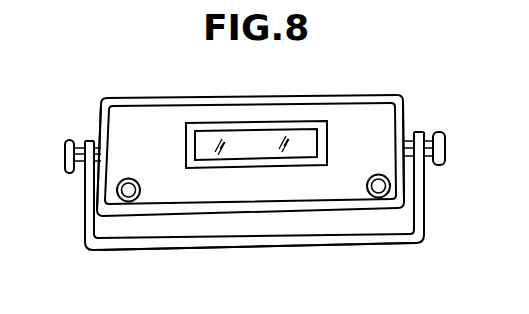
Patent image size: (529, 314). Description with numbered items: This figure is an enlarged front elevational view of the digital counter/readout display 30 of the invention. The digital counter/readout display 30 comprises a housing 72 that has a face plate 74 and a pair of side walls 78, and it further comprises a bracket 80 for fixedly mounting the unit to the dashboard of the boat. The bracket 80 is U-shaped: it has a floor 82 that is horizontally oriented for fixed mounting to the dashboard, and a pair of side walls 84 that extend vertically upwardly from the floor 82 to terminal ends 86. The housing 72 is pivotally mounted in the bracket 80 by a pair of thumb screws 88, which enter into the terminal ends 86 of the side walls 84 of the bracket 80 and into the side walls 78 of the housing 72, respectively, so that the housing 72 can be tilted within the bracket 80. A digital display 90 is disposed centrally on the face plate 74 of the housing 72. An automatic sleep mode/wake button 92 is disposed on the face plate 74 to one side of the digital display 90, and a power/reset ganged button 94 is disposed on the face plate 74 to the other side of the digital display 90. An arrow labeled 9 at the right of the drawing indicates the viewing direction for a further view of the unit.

The digital counter/readout display 30 is at (257, 157).
The housing 72 is at (197, 98).
The face plate 74 is at (334, 109).
The side walls 78 is at (101, 109).
The bracket 80 is at (190, 248).
The floor 82 is at (326, 246).
The side walls 84 is at (84, 200).
The terminal ends 86 is at (89, 140).
The thumb screws 88 is at (64, 157).
The digital display 90 is at (250, 143).
The automatic sleep mode/wake button 92 is at (136, 179).
The power/reset ganged button 94 is at (380, 175).
The viewing direction of FIG. 9 is at (438, 180).